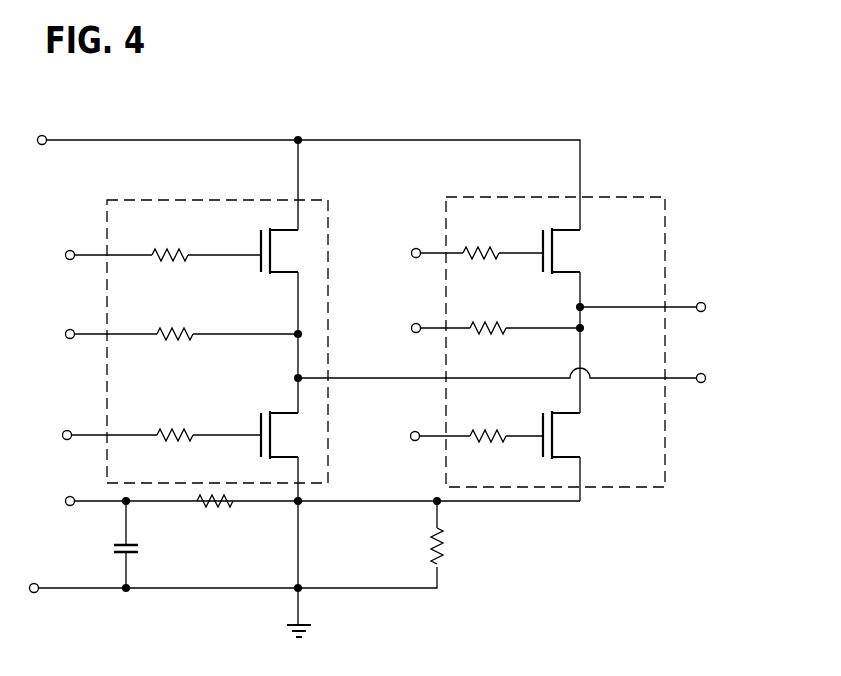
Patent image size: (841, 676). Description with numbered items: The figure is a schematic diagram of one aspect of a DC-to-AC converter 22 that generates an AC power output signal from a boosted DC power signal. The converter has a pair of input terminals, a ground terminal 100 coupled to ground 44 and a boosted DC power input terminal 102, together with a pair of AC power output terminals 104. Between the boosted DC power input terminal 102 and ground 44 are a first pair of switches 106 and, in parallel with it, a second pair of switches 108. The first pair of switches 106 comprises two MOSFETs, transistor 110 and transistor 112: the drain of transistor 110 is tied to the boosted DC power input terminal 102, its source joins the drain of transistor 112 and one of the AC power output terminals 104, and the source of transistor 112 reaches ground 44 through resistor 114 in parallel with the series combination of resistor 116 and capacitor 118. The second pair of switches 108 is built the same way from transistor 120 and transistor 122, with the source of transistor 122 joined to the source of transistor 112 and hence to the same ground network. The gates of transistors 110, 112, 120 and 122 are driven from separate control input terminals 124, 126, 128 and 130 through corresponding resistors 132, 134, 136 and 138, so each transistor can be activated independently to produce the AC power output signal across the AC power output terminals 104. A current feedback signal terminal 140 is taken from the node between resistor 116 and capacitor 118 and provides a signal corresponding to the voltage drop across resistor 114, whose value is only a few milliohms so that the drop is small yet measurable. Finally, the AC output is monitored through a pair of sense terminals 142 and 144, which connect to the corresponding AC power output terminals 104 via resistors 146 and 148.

The DC-to-AC converter 22 is at (672, 160).
The ground 44 is at (311, 626).
The ground terminal 100 is at (66, 588).
The boosted DC power input terminal 102 is at (58, 140).
The AC power output terminals 104 is at (697, 377).
The first pair of switches 106 is at (147, 200).
The second pair of switches 108 is at (533, 197).
The transistor 110 is at (270, 240).
The transistor 112 is at (272, 432).
The resistor 114 is at (433, 548).
The resistor 116 is at (226, 502).
The capacitor 118 is at (128, 545).
The transistor 120 is at (553, 248).
The transistor 122 is at (553, 440).
The control input terminal 124 is at (88, 255).
The control input terminal 126 is at (80, 435).
The control input terminal 128 is at (424, 253).
The control input terminal 130 is at (423, 436).
The resistor 132 is at (165, 255).
The resistor 134 is at (172, 435).
The resistor 136 is at (472, 253).
The resistor 138 is at (505, 440).
The current feedback signal terminal 140 is at (90, 502).
The sense terminal 142 is at (88, 334).
The sense terminal 144 is at (428, 328).
The resistor 146 is at (167, 334).
The resistor 148 is at (500, 328).